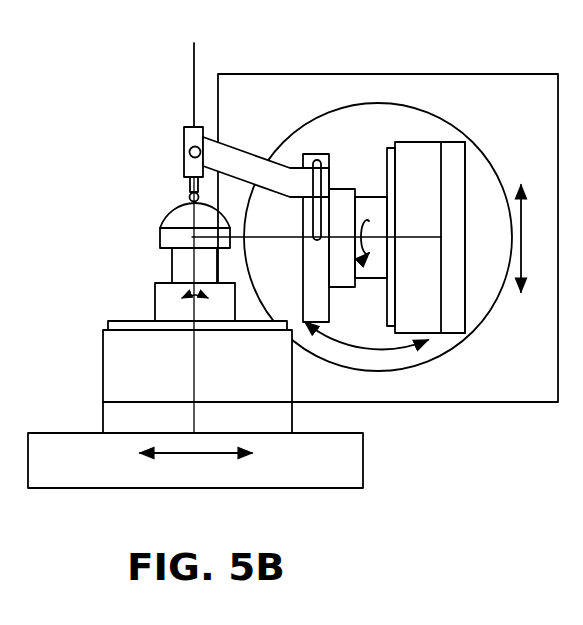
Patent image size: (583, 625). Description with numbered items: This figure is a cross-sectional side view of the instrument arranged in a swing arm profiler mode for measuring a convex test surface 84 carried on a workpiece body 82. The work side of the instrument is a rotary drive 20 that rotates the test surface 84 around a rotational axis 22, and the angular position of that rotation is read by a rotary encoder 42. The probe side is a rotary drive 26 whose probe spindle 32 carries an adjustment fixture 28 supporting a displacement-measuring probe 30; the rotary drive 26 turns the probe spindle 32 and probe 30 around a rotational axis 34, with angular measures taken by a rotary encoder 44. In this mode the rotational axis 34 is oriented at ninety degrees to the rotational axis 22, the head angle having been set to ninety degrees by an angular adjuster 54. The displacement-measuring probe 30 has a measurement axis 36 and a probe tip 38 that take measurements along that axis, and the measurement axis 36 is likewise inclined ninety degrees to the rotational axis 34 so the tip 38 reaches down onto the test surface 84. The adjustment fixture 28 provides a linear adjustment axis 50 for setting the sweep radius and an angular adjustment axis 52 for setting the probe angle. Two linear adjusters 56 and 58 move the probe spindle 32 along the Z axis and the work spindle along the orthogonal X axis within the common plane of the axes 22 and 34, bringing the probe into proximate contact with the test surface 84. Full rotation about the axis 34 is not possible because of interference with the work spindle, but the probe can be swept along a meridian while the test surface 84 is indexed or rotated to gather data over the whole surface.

The rotary drive 20 is at (163, 379).
The rotational axis 22 is at (196, 365).
The rotary drive 26 is at (428, 173).
The adjustment fixture 28 is at (314, 292).
The displacement-measuring probe 30 is at (184, 163).
The probe spindle 32 is at (368, 272).
The rotational axis 34 is at (402, 237).
The measurement axis 36 is at (193, 66).
The probe tip 38 is at (190, 205).
The rotary encoder 42 is at (275, 418).
The rotary encoder 44 is at (458, 160).
The linear adjustment axis 50 is at (313, 218).
The angular adjustment axis 52 is at (192, 148).
The angular adjuster 54 is at (385, 362).
The linear adjuster 56 is at (522, 207).
The linear adjuster 58 is at (225, 457).
The workpiece holder base 82 is at (162, 240).
The convex test surface 84 is at (160, 221).